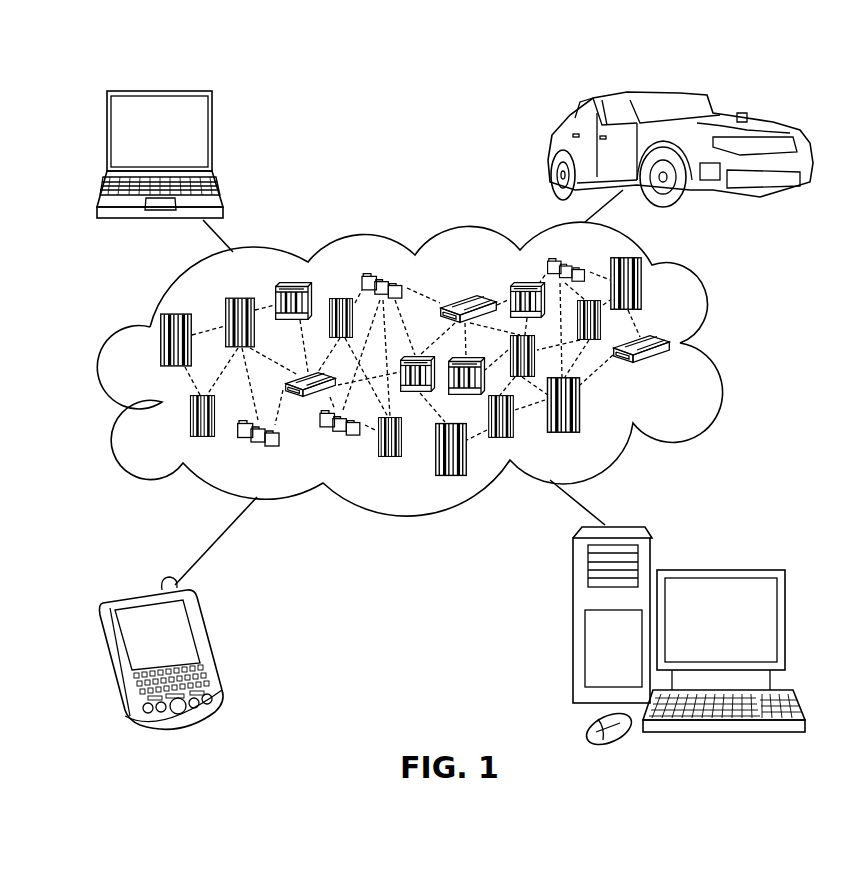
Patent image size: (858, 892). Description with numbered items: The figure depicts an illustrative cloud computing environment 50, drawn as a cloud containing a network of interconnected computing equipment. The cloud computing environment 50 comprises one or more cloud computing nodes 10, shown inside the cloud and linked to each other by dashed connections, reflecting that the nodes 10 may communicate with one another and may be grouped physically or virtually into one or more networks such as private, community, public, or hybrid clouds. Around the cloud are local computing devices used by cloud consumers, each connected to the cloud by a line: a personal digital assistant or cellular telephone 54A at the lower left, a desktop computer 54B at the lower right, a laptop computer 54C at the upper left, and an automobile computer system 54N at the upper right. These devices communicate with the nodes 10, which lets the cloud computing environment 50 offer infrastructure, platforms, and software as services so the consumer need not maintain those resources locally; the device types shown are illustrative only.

The cloud computing nodes 10 is at (456, 367).
The cloud computing environment 50 is at (718, 347).
The personal digital assistant (PDA) or cellular telephone 54A is at (210, 642).
The desktop computer 54B is at (718, 570).
The laptop computer 54C is at (212, 138).
The automobile computer system 54N is at (548, 150).